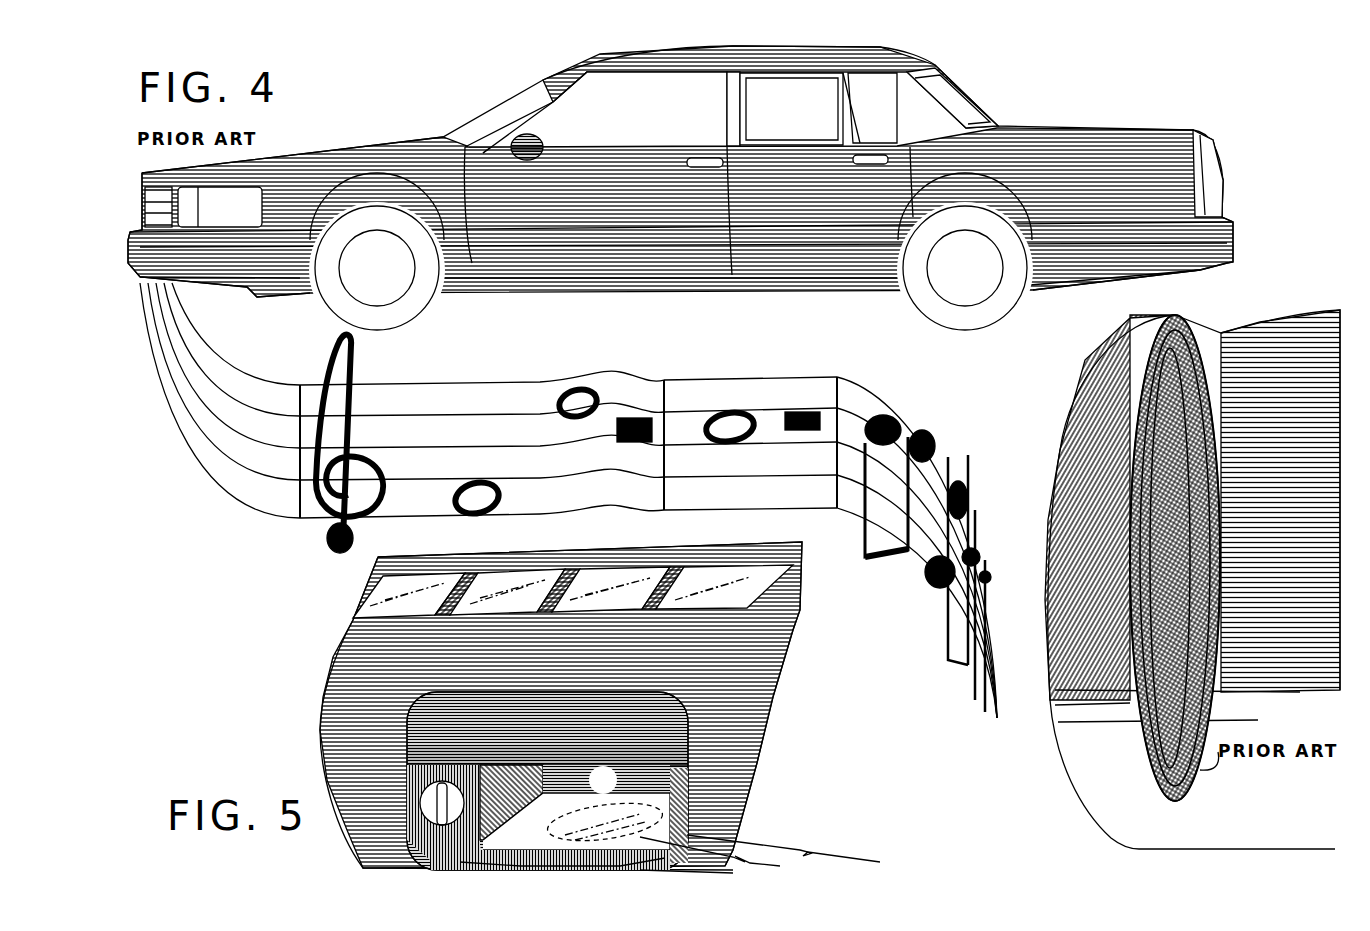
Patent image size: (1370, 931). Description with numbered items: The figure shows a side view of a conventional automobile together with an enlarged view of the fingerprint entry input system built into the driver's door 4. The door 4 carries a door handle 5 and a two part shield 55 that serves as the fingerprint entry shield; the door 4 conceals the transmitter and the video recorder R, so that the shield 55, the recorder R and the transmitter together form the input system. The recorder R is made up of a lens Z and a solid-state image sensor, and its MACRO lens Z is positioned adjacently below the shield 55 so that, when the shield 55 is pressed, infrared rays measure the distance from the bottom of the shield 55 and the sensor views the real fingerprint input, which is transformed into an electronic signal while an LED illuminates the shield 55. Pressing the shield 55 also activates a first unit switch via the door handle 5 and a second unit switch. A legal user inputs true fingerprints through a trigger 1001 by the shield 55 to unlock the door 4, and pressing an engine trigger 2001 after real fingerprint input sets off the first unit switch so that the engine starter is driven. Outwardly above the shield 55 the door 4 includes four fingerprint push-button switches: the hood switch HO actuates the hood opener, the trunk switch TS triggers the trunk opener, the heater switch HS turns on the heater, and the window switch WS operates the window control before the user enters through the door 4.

In FIG. 4, the driver's door 4 is at (593, 145).
In FIG. 5, the driver's door 4 is at (330, 673).
In FIG. 4, the door handle 5 is at (703, 157).
In FIG. 5, the door handle 5 is at (547, 781).
In FIG. 4, the two part shield 55 is at (688, 168).
In FIG. 5, the two part shield 55 is at (685, 812).
In FIG. 5, the hood switch HO is at (360, 595).
In FIG. 5, the trunk switch TS is at (495, 574).
In FIG. 5, the heater switch HS is at (597, 573).
In FIG. 5, the window switch WS is at (750, 590).
In FIG. 5, the engine trigger 2001 is at (453, 862).
In FIG. 5, the lens Z is at (593, 836).
In FIG. 5, the trigger 1001 is at (735, 860).
In FIG. 5, the recorder R is at (792, 855).